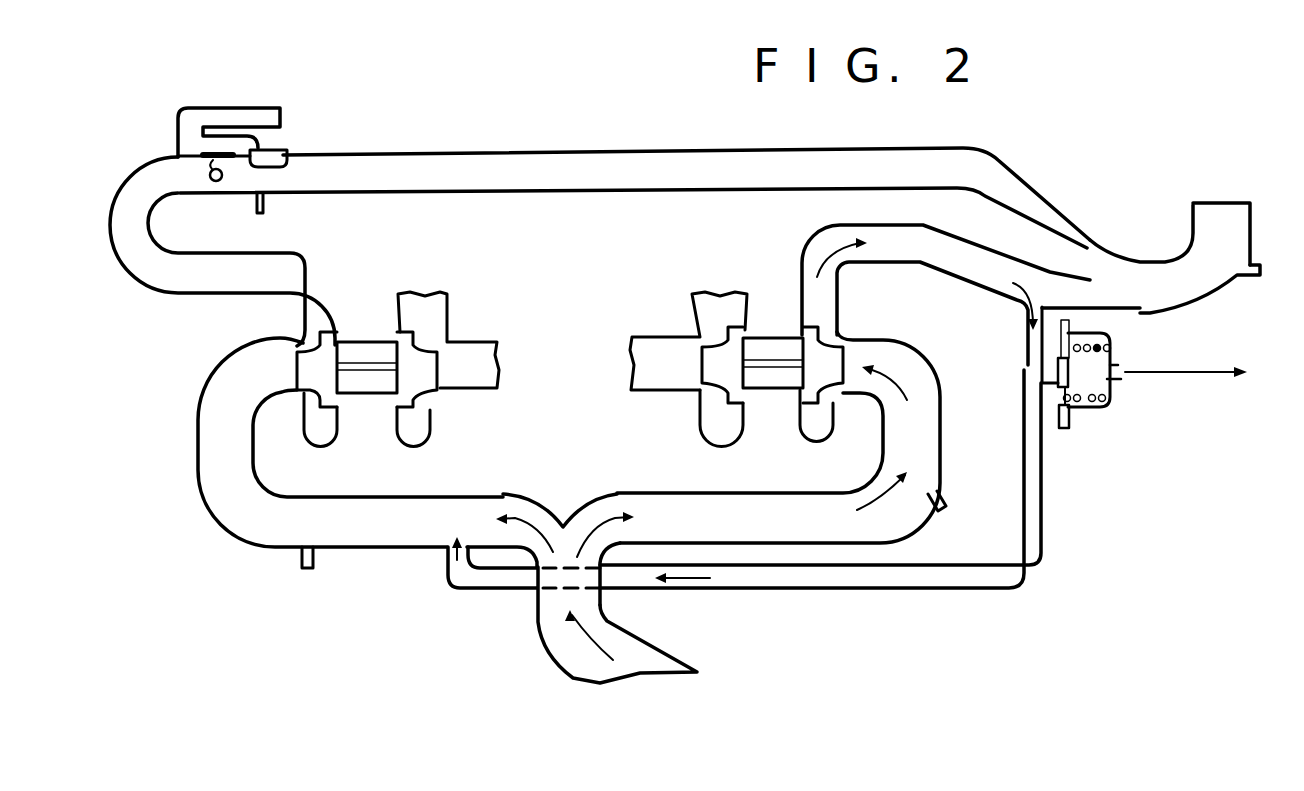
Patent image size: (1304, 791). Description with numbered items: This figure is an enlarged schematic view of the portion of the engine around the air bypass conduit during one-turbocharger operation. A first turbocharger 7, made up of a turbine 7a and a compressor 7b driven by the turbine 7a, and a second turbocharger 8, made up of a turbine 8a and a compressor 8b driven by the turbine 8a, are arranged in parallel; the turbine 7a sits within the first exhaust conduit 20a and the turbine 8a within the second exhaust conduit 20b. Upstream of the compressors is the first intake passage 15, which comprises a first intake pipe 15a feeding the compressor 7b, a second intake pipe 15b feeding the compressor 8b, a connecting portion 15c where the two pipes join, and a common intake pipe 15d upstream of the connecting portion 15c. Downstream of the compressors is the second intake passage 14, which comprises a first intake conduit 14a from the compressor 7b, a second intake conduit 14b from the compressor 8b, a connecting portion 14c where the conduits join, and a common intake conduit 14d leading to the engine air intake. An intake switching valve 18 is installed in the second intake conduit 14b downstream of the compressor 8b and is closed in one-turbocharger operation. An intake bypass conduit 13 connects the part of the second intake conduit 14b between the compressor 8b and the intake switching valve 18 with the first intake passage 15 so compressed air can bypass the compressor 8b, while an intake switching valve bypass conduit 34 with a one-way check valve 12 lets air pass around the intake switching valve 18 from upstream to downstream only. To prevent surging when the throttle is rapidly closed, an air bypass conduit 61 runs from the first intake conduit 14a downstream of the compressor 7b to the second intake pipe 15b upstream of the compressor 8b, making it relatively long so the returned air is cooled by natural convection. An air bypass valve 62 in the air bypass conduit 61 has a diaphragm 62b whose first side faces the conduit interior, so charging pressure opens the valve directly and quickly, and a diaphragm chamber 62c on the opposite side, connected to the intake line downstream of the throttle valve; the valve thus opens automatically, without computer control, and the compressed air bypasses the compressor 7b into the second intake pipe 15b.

The first turbocharger 7 is at (773, 400).
The turbine 7a is at (720, 388).
The compressor 7b is at (833, 388).
The second turbocharger 8 is at (367, 400).
The turbine 8a is at (410, 387).
The compressor 8b is at (318, 385).
The one-way check valve 12 is at (273, 155).
The intake bypass conduit 13 is at (273, 115).
The second intake passage 14 is at (1189, 227).
The first intake conduit 14a is at (813, 260).
The second intake conduit 14b is at (523, 184).
The connecting portion 14c is at (1120, 284).
The common intake conduit 14d is at (1207, 223).
The first intake passage 15 is at (538, 623).
The first intake pipe 15a is at (928, 444).
The second intake pipe 15b is at (212, 443).
The connecting portion 15c is at (563, 525).
The common intake pipe 15d is at (600, 615).
The intake switching valve 18 is at (214, 181).
The first exhaust conduit 20a is at (667, 343).
The second exhaust conduit 20b is at (473, 345).
The intake switching valve bypass conduit 34 is at (225, 144).
The air bypass conduit 61 is at (840, 588).
The air bypass valve 62 is at (1063, 432).
The diaphragm 62b is at (1080, 408).
The diaphragm chamber 62c is at (1102, 383).